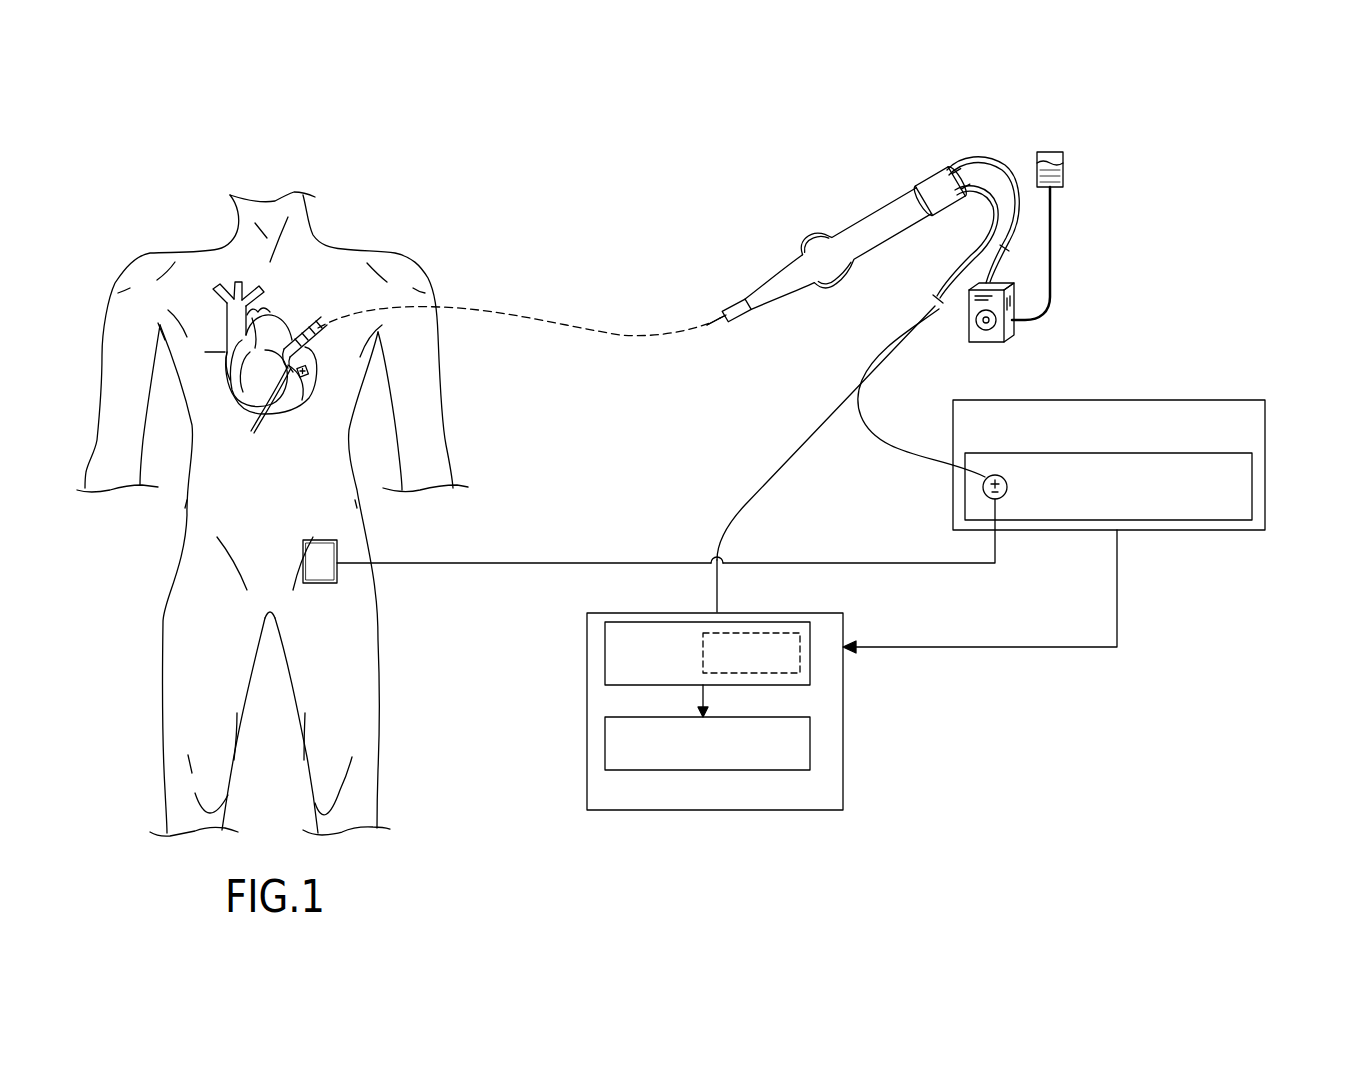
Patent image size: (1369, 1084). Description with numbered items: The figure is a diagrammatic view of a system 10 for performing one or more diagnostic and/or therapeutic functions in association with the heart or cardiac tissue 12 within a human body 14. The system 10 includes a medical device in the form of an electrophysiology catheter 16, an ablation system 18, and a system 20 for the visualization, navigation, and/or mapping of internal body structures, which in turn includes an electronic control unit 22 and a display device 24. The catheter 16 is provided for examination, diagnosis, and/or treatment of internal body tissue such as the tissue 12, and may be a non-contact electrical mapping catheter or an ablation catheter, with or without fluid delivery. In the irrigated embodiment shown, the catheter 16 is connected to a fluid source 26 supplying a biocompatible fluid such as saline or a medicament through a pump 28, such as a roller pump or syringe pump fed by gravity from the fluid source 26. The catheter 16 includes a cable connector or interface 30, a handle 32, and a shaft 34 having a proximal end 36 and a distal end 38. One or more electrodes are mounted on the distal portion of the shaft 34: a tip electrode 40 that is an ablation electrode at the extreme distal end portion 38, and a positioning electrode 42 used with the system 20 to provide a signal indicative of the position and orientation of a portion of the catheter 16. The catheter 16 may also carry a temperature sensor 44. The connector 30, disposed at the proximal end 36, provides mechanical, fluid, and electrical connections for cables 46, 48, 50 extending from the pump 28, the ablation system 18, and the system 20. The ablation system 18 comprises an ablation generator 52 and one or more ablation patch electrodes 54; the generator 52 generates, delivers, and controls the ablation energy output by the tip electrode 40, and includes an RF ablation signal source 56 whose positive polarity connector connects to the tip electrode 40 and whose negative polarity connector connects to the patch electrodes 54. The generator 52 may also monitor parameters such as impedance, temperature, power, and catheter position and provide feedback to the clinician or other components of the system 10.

The system 10 is at (557, 198).
The cardiac tissue 12 is at (315, 390).
The human body 14 is at (167, 613).
The electrophysiology catheter 16 is at (834, 258).
The ablation system 18 is at (1266, 428).
The visualization, navigation, and/or mapping system 20 is at (843, 788).
The electronic control unit 22 is at (810, 662).
The display device 24 is at (810, 747).
The fluid source 26 is at (1065, 180).
The pump 28 is at (1022, 268).
The cable connector 30 is at (927, 177).
The handle 32 is at (874, 207).
The shaft 34 is at (712, 317).
The proximal end 36 is at (736, 334).
The distal end 38 is at (272, 318).
The tip electrode 40 is at (265, 412).
The positioning electrode 42 is at (313, 325).
The temperature sensor 44 is at (312, 373).
The cable 46 is at (996, 158).
The cable 48 is at (978, 196).
The cable 50 is at (926, 334).
The ablation generator 52 is at (1252, 472).
The ablation patch electrode 54 is at (337, 553).
The RF ablation signal source 56 is at (983, 488).